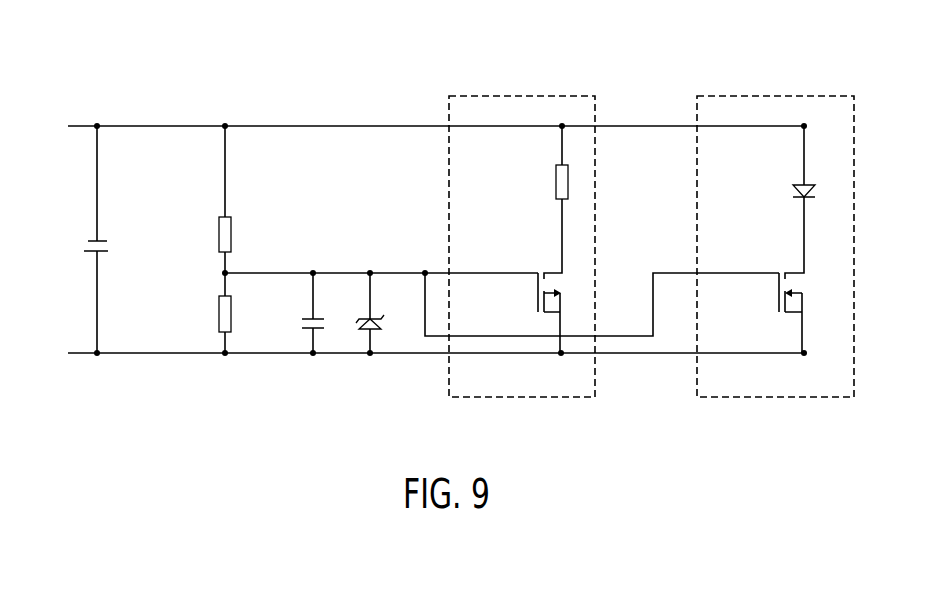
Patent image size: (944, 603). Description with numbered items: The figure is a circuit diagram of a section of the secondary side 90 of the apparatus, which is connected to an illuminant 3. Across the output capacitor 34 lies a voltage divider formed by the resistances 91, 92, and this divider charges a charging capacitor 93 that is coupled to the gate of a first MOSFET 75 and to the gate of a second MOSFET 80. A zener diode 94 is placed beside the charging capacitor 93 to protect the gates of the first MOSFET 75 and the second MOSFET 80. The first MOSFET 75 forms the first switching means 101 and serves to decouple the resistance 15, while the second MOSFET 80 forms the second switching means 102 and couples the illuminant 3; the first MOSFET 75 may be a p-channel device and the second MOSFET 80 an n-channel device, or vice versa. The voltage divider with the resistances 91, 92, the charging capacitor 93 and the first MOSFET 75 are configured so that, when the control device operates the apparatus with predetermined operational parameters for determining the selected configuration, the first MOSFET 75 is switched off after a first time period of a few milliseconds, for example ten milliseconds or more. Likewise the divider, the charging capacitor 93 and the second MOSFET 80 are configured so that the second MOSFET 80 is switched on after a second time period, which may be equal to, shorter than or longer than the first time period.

The secondary side 90 is at (97, 73).
The output capacitor 34 is at (88, 243).
The resistance 91 is at (218, 243).
The resistance 92 is at (218, 315).
The charging capacitor 93 is at (302, 317).
The zener diode 94 is at (370, 318).
The first module 101 is at (507, 397).
The second module 102 is at (793, 397).
The resistance 15 is at (555, 178).
The first MOSFET 75 is at (523, 269).
The illuminant 3 is at (792, 187).
The second MOSFET 80 is at (774, 267).